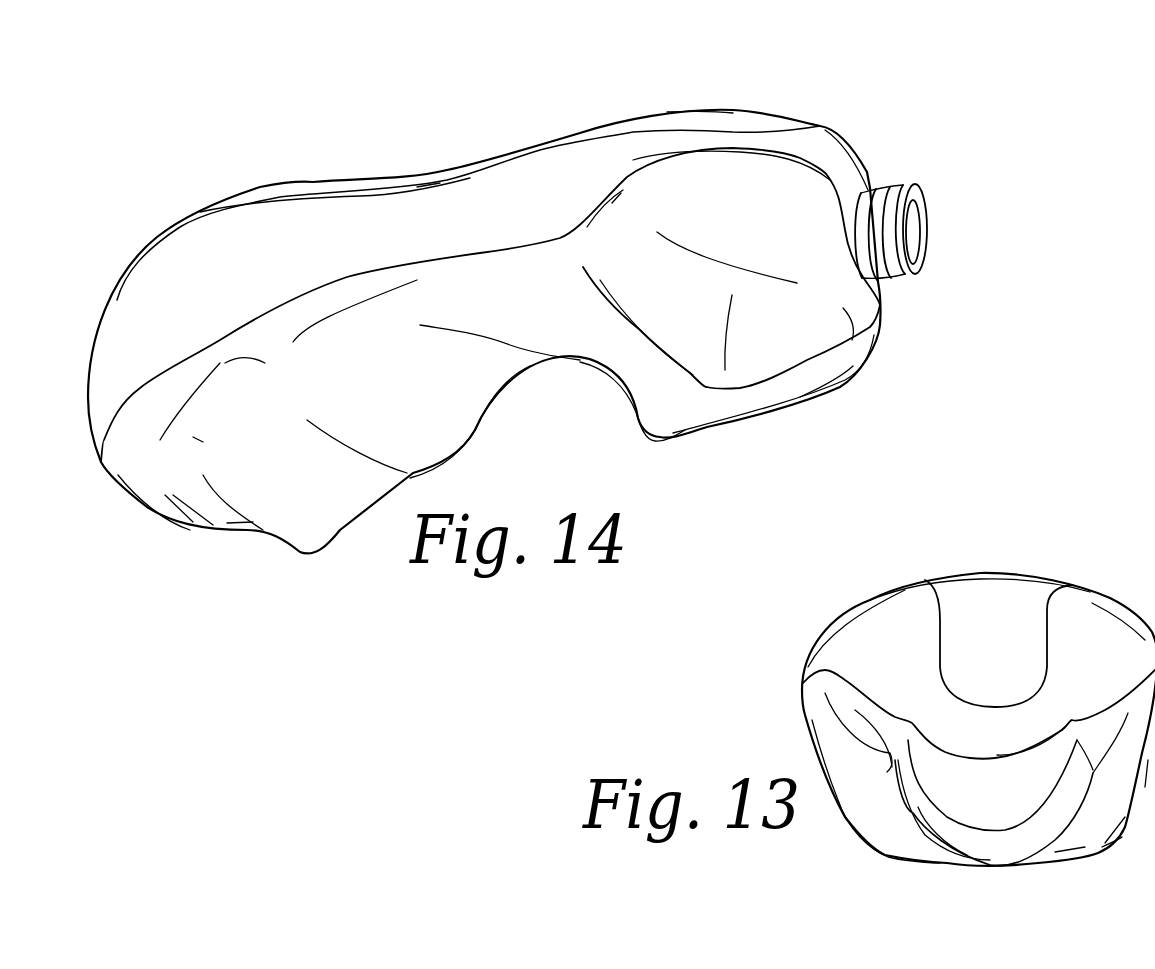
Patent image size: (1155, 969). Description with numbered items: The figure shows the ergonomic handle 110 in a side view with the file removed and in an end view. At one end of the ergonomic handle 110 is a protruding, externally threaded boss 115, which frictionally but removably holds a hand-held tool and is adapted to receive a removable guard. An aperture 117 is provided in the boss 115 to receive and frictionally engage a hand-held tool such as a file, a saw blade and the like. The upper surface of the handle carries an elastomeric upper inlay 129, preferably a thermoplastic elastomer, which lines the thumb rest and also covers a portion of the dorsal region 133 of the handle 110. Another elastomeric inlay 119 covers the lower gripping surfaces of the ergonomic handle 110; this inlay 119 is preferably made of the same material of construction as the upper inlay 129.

In FIG. 14, the ergonomic handle 110 is at (376, 140).
In FIG. 13, the ergonomic handle 110 is at (978, 540).
In FIG. 14, the externally threaded boss 115 is at (872, 188).
In FIG. 14, the aperture 117 is at (918, 238).
In FIG. 14, the elastomeric inlay 119 is at (433, 387).
In FIG. 13, the elastomeric inlay 119 is at (868, 808).
In FIG. 14, the upper inlay 129 is at (763, 125).
In FIG. 13, the upper inlay 129 is at (942, 583).
In FIG. 13, the dorsal region 133 is at (912, 657).